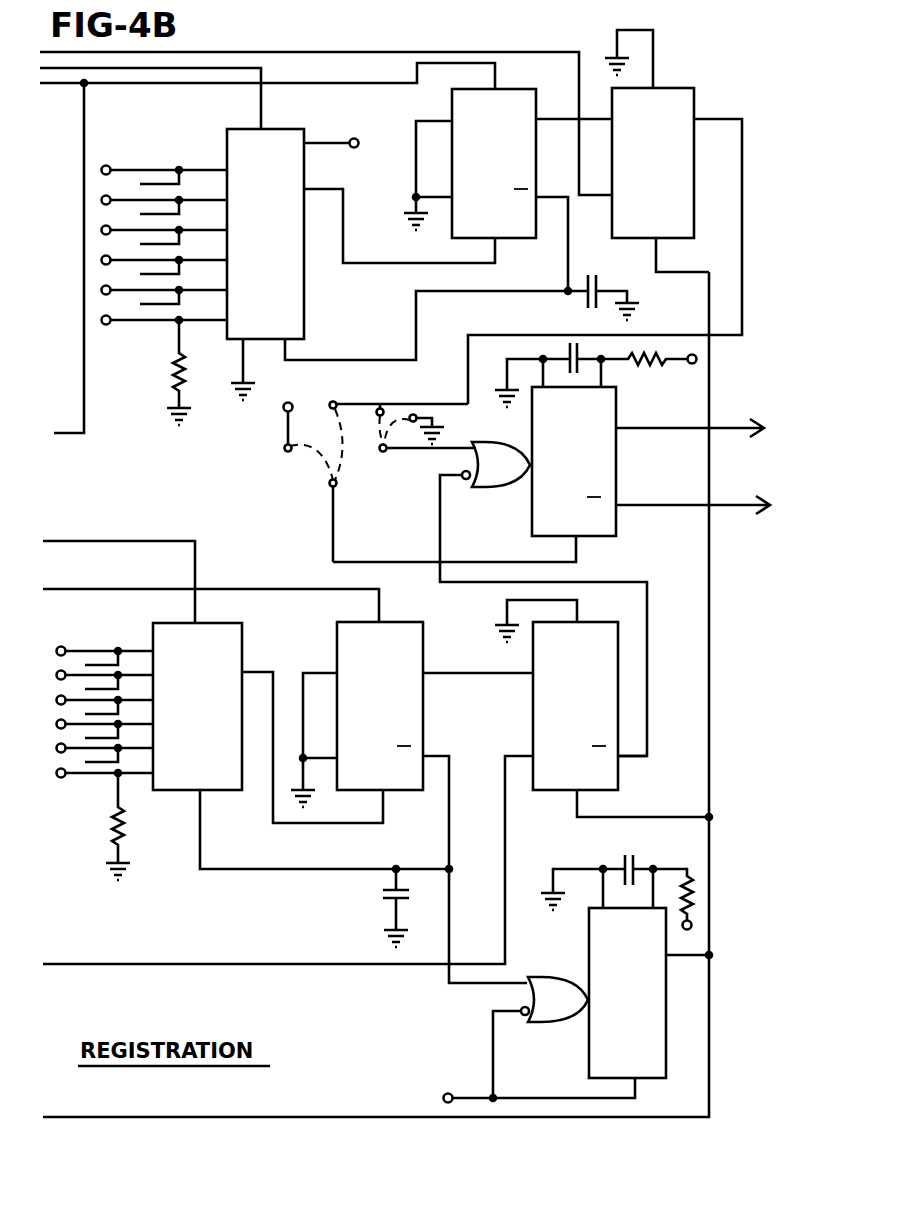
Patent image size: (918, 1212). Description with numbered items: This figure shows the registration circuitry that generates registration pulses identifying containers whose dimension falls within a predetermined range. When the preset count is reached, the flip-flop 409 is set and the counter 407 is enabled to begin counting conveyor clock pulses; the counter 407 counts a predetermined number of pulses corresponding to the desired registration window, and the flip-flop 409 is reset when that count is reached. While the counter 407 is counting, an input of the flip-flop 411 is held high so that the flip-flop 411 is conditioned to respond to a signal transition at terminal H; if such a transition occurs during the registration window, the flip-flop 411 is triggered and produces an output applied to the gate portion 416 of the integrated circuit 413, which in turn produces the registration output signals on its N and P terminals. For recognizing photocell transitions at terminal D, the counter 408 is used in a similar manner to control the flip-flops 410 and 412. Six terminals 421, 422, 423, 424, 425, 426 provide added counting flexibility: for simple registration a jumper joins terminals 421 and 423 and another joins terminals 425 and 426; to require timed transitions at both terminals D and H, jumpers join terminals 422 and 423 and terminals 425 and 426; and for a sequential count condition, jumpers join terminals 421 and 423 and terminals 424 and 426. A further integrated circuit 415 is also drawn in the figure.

The counter 407 is at (216, 782).
The counter 408 is at (232, 146).
The flip-flop 409 is at (397, 778).
The flip-flop 410 is at (458, 224).
The flip-flop 411 is at (606, 772).
The flip-flop 412 is at (667, 95).
The integrated circuit 413 is at (610, 525).
The monostable multivibrator 415 is at (597, 1030).
The gate portion 416 is at (488, 442).
The terminal 421 is at (286, 452).
The terminal 422 is at (331, 401).
The terminal 423 is at (330, 487).
The terminal 424 is at (378, 408).
The terminal 425 is at (415, 414).
The terminal 426 is at (383, 452).